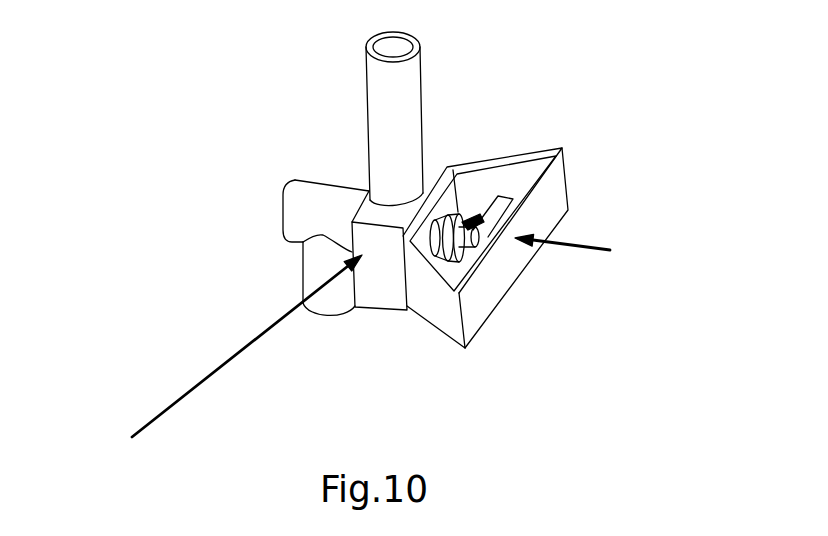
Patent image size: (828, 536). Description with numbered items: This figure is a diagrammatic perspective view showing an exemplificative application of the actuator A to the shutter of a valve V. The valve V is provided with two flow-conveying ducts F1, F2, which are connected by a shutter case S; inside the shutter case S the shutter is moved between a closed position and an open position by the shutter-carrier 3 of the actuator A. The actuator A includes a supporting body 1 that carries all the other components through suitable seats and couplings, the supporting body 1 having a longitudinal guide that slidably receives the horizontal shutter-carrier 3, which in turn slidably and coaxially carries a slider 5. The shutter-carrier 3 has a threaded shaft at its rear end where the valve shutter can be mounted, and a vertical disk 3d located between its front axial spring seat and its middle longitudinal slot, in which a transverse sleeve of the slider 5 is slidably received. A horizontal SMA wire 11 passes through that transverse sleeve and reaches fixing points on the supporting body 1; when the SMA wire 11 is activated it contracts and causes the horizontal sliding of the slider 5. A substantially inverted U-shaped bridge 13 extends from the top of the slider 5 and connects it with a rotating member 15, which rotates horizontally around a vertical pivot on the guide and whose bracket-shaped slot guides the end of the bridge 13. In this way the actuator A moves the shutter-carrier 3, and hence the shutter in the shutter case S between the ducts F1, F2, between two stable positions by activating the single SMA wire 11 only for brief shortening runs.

The supporting body 1 is at (457, 333).
The shutter-carrier 3 is at (490, 297).
The vertical disk 3d is at (477, 333).
The slider 5 is at (426, 288).
The SMA wire 11 is at (435, 270).
The bridge 13 is at (462, 210).
The rotating member 15 is at (483, 212).
The flow-conveying duct F1 is at (376, 42).
The flow-conveying duct F2 is at (332, 298).
The shutter case S is at (318, 178).
The actuator A is at (574, 248).
The valve V is at (236, 356).